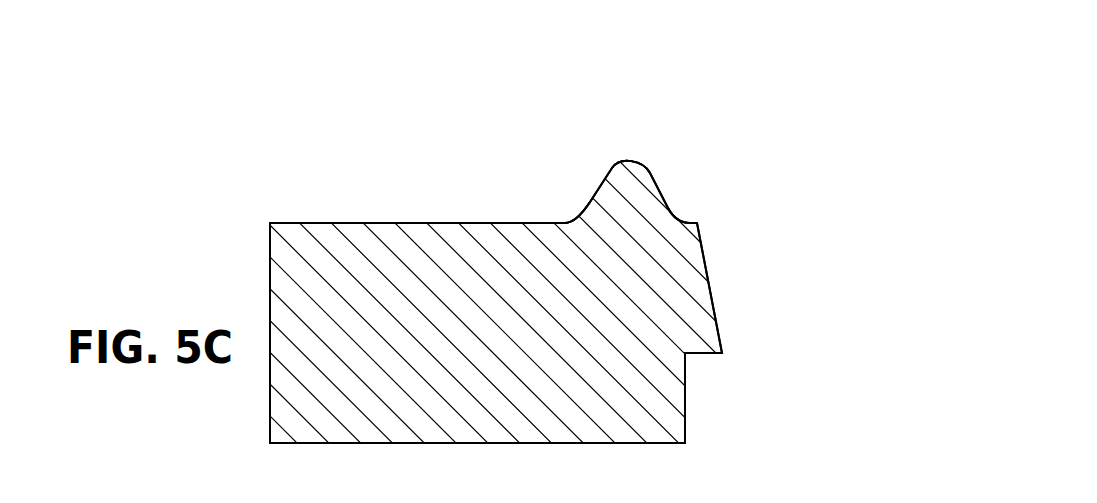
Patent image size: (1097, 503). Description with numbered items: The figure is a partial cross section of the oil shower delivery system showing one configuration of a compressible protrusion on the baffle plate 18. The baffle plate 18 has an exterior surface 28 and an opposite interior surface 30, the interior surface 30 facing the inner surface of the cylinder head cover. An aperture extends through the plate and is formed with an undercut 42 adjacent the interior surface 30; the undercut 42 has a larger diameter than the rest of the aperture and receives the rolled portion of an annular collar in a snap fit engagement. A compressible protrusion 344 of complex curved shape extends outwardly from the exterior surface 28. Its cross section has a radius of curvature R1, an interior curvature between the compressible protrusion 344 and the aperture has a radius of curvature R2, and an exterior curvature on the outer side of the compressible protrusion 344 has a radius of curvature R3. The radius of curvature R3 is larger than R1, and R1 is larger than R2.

The baffle plate 18 is at (320, 292).
The exterior surface 28 is at (402, 223).
The interior surface 30 is at (336, 443).
The undercut 42 is at (705, 398).
The compressible protrusion 344 is at (693, 161).
The radius of curvature of the compressible protrusion R1 is at (628, 186).
The radius of curvature of the interior curvature R2 is at (673, 212).
The radius of curvature of the exterior curvature R3 is at (587, 206).